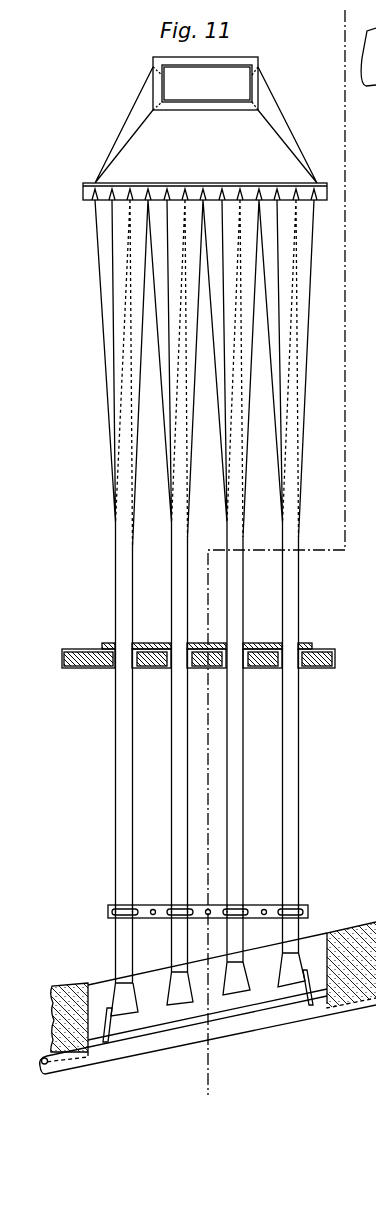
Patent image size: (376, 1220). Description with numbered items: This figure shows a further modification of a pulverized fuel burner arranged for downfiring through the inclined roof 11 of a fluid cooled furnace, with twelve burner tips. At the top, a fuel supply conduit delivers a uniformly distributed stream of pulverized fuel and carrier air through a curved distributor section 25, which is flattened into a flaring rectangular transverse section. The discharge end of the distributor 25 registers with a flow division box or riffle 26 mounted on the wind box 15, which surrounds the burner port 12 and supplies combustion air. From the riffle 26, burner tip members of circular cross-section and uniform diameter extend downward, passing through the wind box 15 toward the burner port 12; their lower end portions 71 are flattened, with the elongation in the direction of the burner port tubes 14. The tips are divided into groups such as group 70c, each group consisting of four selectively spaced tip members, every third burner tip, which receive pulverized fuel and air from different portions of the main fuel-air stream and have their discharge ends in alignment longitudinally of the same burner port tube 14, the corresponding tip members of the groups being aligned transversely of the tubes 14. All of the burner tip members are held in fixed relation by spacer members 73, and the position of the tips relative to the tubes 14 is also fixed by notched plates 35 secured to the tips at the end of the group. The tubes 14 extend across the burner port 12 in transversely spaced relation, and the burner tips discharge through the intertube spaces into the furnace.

The burner port 12 is at (345, 20).
The distributor section 25 is at (287, 138).
The flow division box or riffle 26 is at (327, 194).
The burner tip group 70c is at (237, 803).
The lower end portions 71 is at (280, 970).
The wind box 15 is at (323, 650).
The spacer members 73 is at (253, 905).
The fluid heating tubes 14 is at (280, 1022).
The roof 11 is at (353, 918).
The notched plates 35 is at (107, 1010).